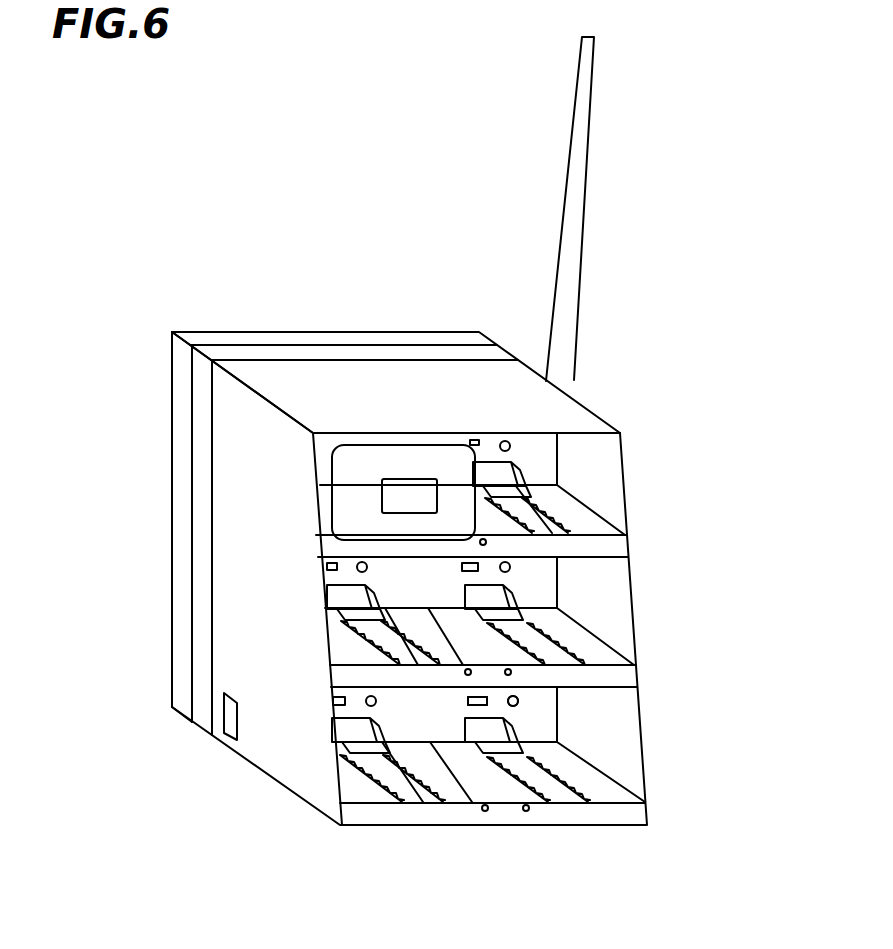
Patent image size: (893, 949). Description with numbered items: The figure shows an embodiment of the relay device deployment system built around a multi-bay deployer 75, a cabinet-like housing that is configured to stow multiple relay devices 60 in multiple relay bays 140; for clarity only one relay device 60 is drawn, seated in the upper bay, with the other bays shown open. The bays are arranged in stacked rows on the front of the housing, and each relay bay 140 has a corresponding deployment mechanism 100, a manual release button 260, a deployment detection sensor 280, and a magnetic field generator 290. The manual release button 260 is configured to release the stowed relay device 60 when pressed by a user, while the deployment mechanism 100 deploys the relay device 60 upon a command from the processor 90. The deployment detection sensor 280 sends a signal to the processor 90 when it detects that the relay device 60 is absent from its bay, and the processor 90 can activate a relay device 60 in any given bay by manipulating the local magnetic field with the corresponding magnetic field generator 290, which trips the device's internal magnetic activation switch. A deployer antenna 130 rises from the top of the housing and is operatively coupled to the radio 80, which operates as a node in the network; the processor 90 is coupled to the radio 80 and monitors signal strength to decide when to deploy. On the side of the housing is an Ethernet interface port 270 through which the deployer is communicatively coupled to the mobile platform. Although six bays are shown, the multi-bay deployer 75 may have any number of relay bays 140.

The relay device 60 is at (402, 457).
The multi-bay deployer 75 is at (575, 418).
The radio 80 is at (182, 514).
The processor 90 is at (203, 638).
The deployment mechanism 100 is at (513, 592).
The deployer antenna 130 is at (583, 227).
The relay bay 140 is at (633, 535).
The manual release button 260 is at (485, 812).
The Ethernet interface port 270 is at (228, 725).
The deployment detection sensor 280 is at (518, 703).
The magnetic field generator 290 is at (467, 703).